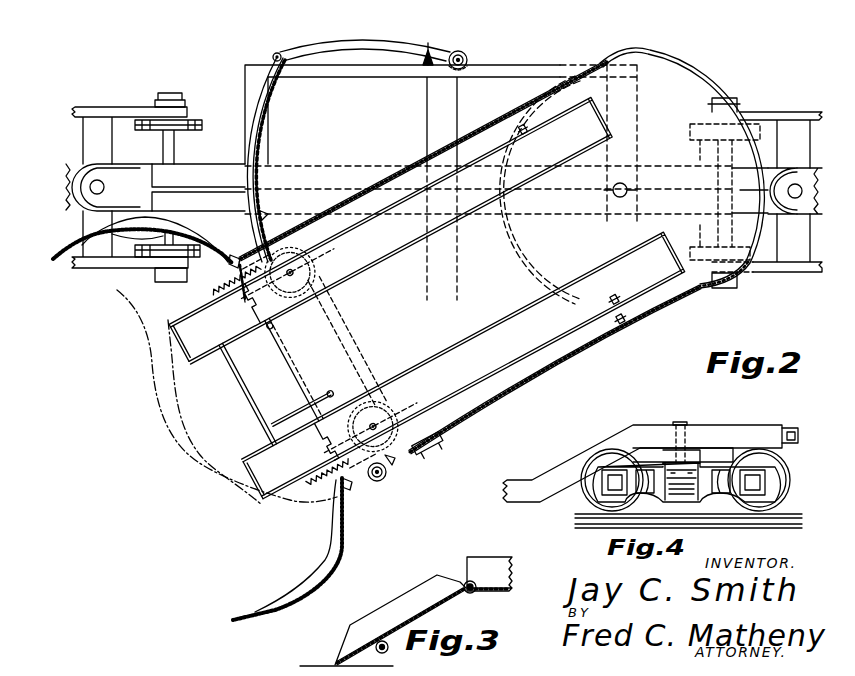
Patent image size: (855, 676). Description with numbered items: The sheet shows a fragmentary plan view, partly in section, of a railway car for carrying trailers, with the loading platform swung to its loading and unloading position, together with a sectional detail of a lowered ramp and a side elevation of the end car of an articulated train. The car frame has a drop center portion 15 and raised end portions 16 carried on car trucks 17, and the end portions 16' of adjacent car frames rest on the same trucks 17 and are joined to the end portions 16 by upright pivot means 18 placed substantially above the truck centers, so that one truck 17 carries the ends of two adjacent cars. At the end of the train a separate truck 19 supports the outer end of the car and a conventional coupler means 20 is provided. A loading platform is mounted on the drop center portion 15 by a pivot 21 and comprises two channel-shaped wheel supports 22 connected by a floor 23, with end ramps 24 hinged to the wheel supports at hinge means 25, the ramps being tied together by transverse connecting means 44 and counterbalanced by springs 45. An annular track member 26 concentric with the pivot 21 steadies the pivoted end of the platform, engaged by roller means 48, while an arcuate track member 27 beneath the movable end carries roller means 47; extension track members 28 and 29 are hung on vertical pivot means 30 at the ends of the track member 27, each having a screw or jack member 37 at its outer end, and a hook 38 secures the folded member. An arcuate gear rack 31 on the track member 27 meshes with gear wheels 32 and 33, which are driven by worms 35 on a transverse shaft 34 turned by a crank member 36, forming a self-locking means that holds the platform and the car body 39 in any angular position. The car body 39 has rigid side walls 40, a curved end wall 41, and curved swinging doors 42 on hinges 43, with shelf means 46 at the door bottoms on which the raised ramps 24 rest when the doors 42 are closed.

In FIG. 2, the drop center portion 15 is at (379, 170).
In FIG. 2, the raised end portions 16 is at (472, 178).
In FIG. 2, the end portions of adjacent car frames 16' is at (444, 170).
In FIG. 2, the car trucks 17 is at (133, 102).
In FIG. 2, the upright pivot means 18 is at (97, 180).
In FIG. 4, the separate truck 19 is at (710, 456).
In FIG. 4, the coupler means 20 is at (789, 450).
In FIG. 2, the pivot 21 is at (636, 193).
In FIG. 2, the wheel supports 22 is at (403, 243).
In FIG. 3, the wheel supports 22 is at (500, 575).
In FIG. 2, the floor 23 is at (305, 406).
In FIG. 2, the end ramps 24 is at (178, 337).
In FIG. 3, the end ramps 24 is at (397, 606).
In FIG. 3, the hinge means 25 is at (480, 597).
In FIG. 2, the annular track member 26 is at (536, 270).
In FIG. 2, the arcuate track member 27 is at (258, 100).
In FIG. 2, the extension track member 28 is at (285, 370).
In FIG. 2, the extension track member 29 is at (359, 45).
In FIG. 2, the vertical pivot means 30 is at (276, 53).
In FIG. 2, the arcuate gear rack 31 is at (264, 148).
In FIG. 2, the gear wheel 32 is at (342, 402).
In FIG. 2, the gear wheel 33 is at (330, 286).
In FIG. 2, the transverse shaft 34 is at (370, 364).
In FIG. 2, the worms 35 is at (304, 260).
In FIG. 2, the crank member 36 is at (438, 444).
In FIG. 2, the screw or jack member 37 is at (468, 53).
In FIG. 2, the hook 38 is at (429, 47).
In FIG. 2, the car body 39 is at (548, 386).
In FIG. 2, the side walls 40 is at (492, 126).
In FIG. 2, the end wall 41 is at (702, 74).
In FIG. 2, the swinging doors 42 is at (96, 238).
In FIG. 2, the hinges 43 is at (237, 254).
In FIG. 2, the transverse connecting means 44 is at (244, 402).
In FIG. 3, the transverse connecting means 44 is at (387, 652).
In FIG. 2, the springs 45 is at (216, 283).
In FIG. 2, the shelf means 46 is at (128, 233).
In FIG. 2, the roller means 47 is at (270, 213).
In FIG. 2, the roller means 48 is at (527, 136).